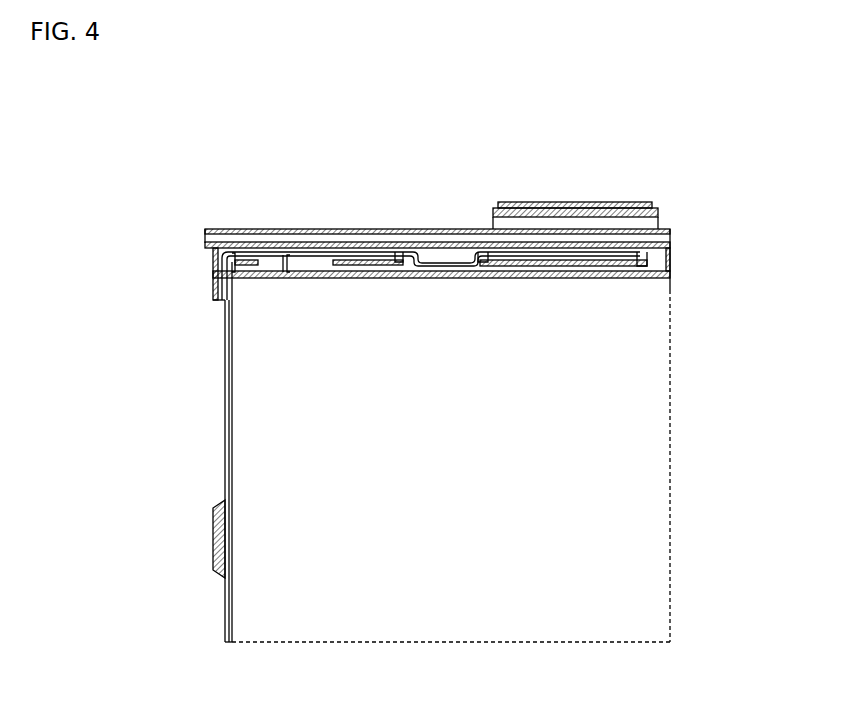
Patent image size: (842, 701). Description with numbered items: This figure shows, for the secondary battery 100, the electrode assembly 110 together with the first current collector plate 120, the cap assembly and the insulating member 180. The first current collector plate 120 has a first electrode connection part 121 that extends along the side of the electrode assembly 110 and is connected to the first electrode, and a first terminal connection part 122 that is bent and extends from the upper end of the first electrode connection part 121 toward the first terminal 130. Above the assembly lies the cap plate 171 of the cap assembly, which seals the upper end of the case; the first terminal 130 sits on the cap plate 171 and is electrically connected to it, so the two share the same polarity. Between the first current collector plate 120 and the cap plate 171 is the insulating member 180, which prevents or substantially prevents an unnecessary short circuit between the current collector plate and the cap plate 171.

The secondary battery 100 is at (92, 116).
The electrode assembly 110 is at (612, 469).
The first current collector plate 120 is at (222, 460).
The first electrode connection part 121 is at (224, 389).
The first terminal connection part 122 is at (253, 255).
The first terminal 130 is at (579, 200).
The cap plate 171 is at (259, 229).
The insulating member 180 is at (212, 258).